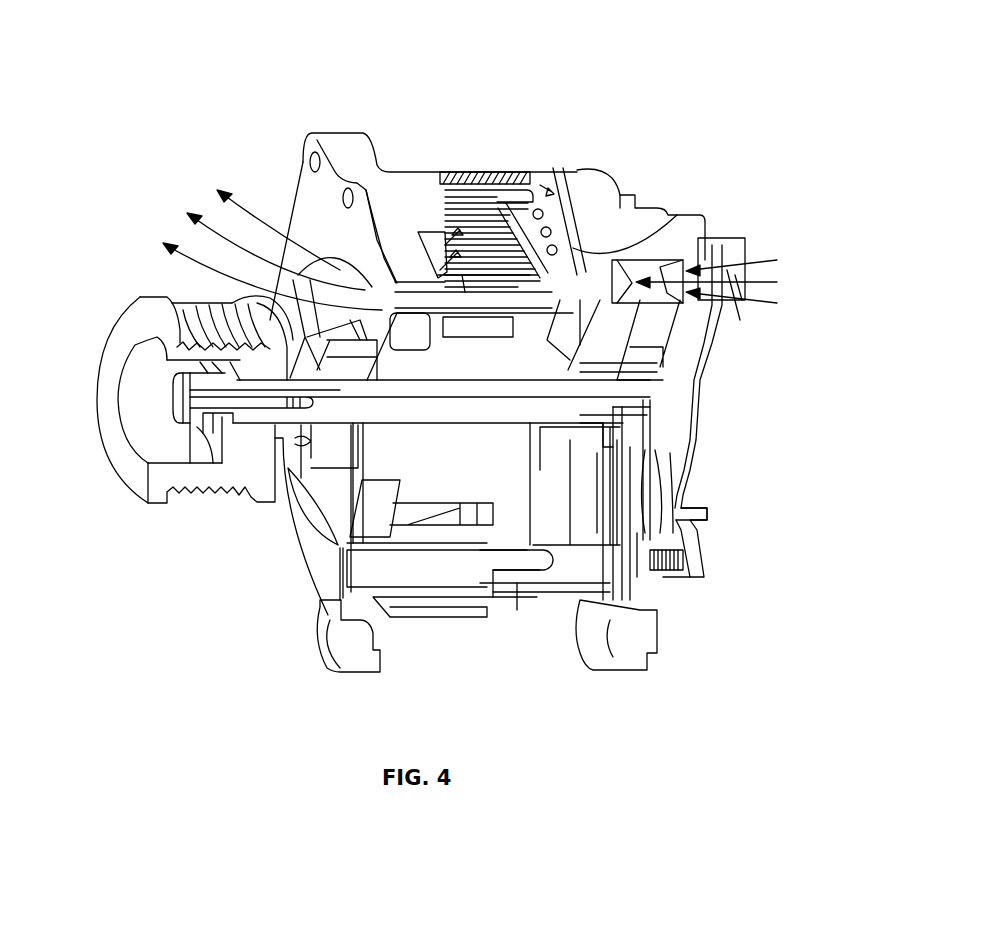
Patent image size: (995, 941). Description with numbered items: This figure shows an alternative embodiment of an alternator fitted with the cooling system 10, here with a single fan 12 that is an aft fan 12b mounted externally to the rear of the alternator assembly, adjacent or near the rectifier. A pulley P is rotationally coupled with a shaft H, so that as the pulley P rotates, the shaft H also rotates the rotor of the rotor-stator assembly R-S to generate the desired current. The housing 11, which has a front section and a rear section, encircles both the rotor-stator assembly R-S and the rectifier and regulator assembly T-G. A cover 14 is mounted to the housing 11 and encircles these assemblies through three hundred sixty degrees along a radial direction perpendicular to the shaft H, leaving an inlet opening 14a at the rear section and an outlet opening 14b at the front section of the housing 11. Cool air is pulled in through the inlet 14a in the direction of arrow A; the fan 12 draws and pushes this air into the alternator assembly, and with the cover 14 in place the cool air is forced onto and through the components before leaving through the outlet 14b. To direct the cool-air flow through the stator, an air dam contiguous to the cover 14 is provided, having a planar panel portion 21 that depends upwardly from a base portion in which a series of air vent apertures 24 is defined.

The cooling system 10 is at (654, 127).
The housing 11 is at (443, 178).
The fan 12 is at (700, 540).
The aft fan 12b is at (691, 514).
The cover 14 is at (477, 178).
The inlet opening 14a is at (680, 267).
The outlet opening 14b is at (340, 270).
The planar panel portion 21 is at (690, 267).
The air vent apertures 24 is at (573, 253).
The directional arrow A is at (473, 249).
The pulley P is at (115, 340).
The shaft H is at (173, 407).
The rectifier and regulator assembly T-G is at (590, 467).
The rotor-stator assembly R-S is at (490, 473).